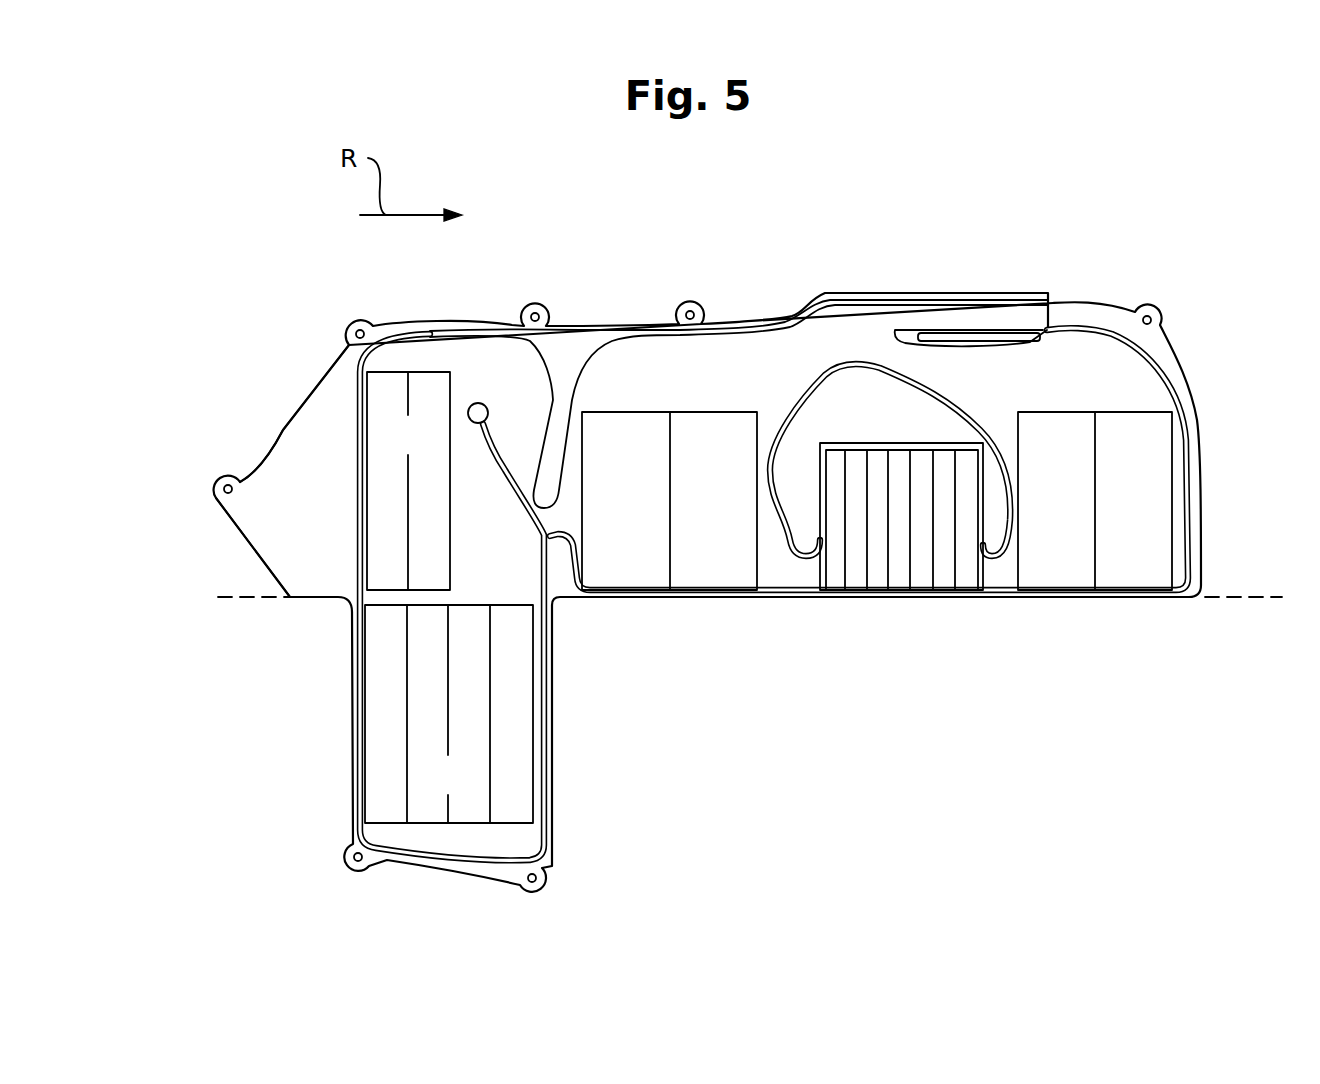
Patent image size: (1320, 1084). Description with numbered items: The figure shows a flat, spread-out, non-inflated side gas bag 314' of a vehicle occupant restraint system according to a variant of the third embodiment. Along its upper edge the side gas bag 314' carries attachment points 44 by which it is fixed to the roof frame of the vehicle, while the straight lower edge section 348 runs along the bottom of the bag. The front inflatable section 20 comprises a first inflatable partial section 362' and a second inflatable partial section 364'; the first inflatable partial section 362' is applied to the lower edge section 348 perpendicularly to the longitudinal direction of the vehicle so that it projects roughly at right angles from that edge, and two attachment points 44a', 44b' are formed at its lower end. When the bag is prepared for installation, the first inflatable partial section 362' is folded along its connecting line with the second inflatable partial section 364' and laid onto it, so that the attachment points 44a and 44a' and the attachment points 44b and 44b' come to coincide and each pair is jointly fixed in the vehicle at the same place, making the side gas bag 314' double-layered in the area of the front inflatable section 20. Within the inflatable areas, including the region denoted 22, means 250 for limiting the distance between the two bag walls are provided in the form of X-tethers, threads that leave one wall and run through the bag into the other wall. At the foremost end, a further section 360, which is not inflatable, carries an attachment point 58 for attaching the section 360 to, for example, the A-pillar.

The side gas bag 314' is at (748, 513).
The attachment points 44 is at (694, 303).
The attachment point 44a is at (571, 272).
The attachment point 44b is at (309, 302).
The attachment point 44a' is at (597, 898).
The attachment point 44b' is at (292, 872).
The attachment point 58 is at (214, 488).
The further section 360 is at (313, 438).
The means for limiting the distance between the walls 250 is at (387, 513).
The lower edge section 348 is at (740, 600).
The front inflatable section 20 is at (504, 572).
The second chamber region 22 is at (723, 489).
The first inflatable partial section 362' is at (449, 714).
The second inflatable partial section 364' is at (408, 481).